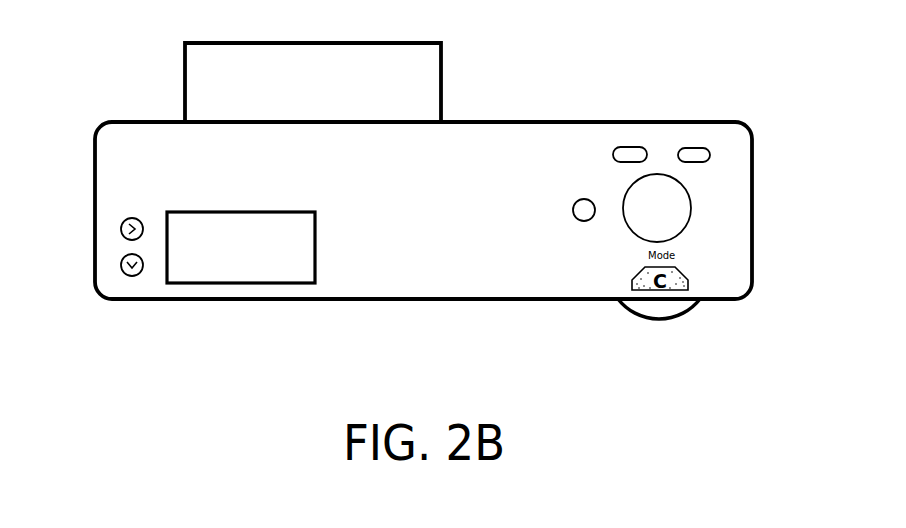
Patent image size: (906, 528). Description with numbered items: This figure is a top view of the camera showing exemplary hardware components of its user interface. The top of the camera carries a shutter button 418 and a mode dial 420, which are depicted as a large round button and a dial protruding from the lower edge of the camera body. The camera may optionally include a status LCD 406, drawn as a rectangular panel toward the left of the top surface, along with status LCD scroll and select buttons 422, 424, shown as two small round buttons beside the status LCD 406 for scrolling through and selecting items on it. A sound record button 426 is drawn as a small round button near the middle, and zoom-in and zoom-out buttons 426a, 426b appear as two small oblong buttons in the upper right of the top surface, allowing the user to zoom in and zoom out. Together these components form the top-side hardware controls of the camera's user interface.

The status LCD 406 is at (278, 285).
The shutter button 418 is at (683, 228).
The mode dial 420 is at (668, 320).
The status LCD scroll and select button 422 is at (119, 230).
The status LCD scroll and select button 424 is at (119, 265).
The sound record button 426 is at (567, 210).
The zoom-in button 426a is at (622, 147).
The zoom-out button 426b is at (698, 148).